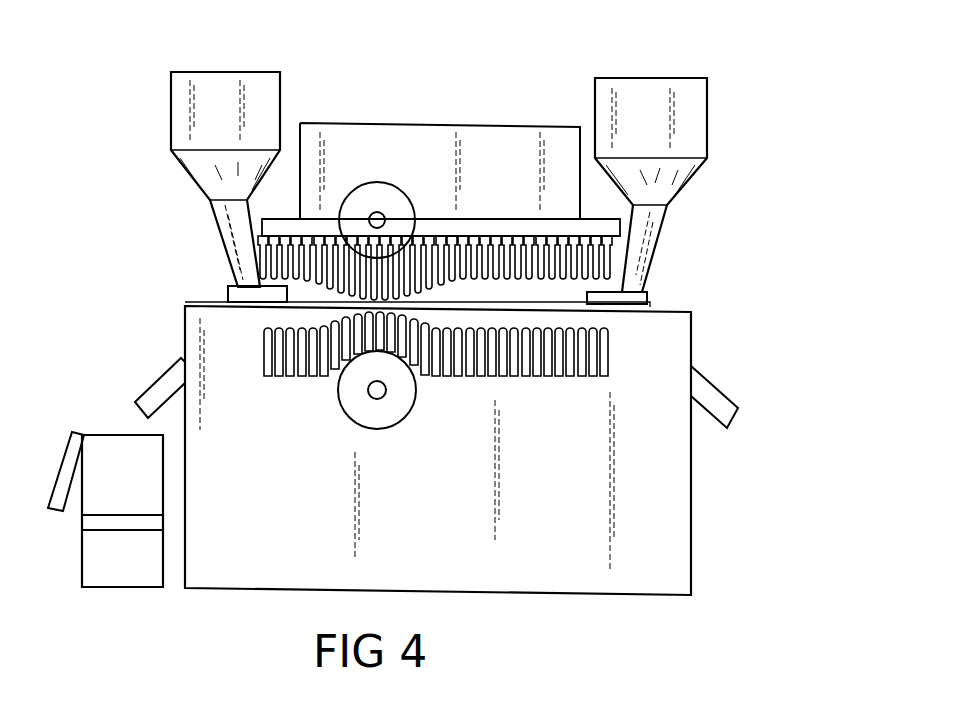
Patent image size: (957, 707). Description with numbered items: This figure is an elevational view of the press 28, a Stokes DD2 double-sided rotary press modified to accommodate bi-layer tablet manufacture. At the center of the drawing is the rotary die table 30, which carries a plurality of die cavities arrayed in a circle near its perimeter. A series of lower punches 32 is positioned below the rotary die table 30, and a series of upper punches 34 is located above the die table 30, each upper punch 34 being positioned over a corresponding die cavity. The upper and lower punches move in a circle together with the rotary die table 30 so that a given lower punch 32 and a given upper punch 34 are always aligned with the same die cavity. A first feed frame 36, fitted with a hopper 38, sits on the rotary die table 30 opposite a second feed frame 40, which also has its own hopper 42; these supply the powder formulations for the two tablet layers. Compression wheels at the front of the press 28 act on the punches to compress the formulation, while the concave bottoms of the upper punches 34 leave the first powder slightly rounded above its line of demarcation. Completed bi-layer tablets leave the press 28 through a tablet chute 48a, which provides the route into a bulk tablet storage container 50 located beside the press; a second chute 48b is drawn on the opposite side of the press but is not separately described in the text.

The press 28 is at (418, 106).
The rotary die table 30 is at (655, 302).
The lower punches 32 is at (558, 380).
The upper punches 34 is at (502, 243).
The first feed frame 36 is at (226, 286).
The hopper 38 is at (284, 82).
The second feed frame 40 is at (653, 290).
The hopper 42 is at (592, 92).
The tablet chute 48a is at (152, 385).
The bracket 48b is at (718, 386).
The bulk tablet storage container 50 is at (118, 434).